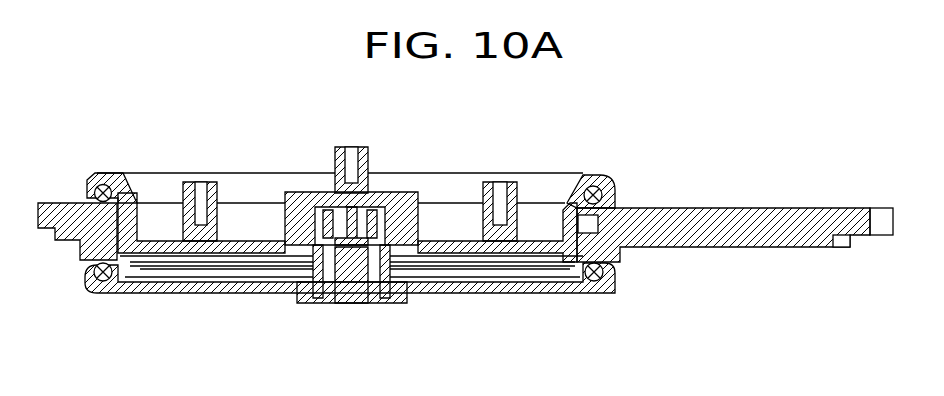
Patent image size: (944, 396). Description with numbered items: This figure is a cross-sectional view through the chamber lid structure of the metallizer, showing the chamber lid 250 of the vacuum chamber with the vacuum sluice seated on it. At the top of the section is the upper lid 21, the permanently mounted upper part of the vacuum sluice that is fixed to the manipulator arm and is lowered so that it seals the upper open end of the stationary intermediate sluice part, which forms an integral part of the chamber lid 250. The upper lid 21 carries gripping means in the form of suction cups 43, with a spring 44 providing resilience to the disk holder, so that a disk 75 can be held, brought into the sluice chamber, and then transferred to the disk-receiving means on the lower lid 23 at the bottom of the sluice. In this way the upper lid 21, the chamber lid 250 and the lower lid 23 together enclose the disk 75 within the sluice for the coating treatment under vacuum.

The upper lid 21 is at (594, 177).
The lower lid 23 is at (567, 293).
The suction cups 43 is at (280, 283).
The spring 44 is at (393, 192).
The disk 75 is at (398, 268).
The chamber lid 250 is at (732, 220).